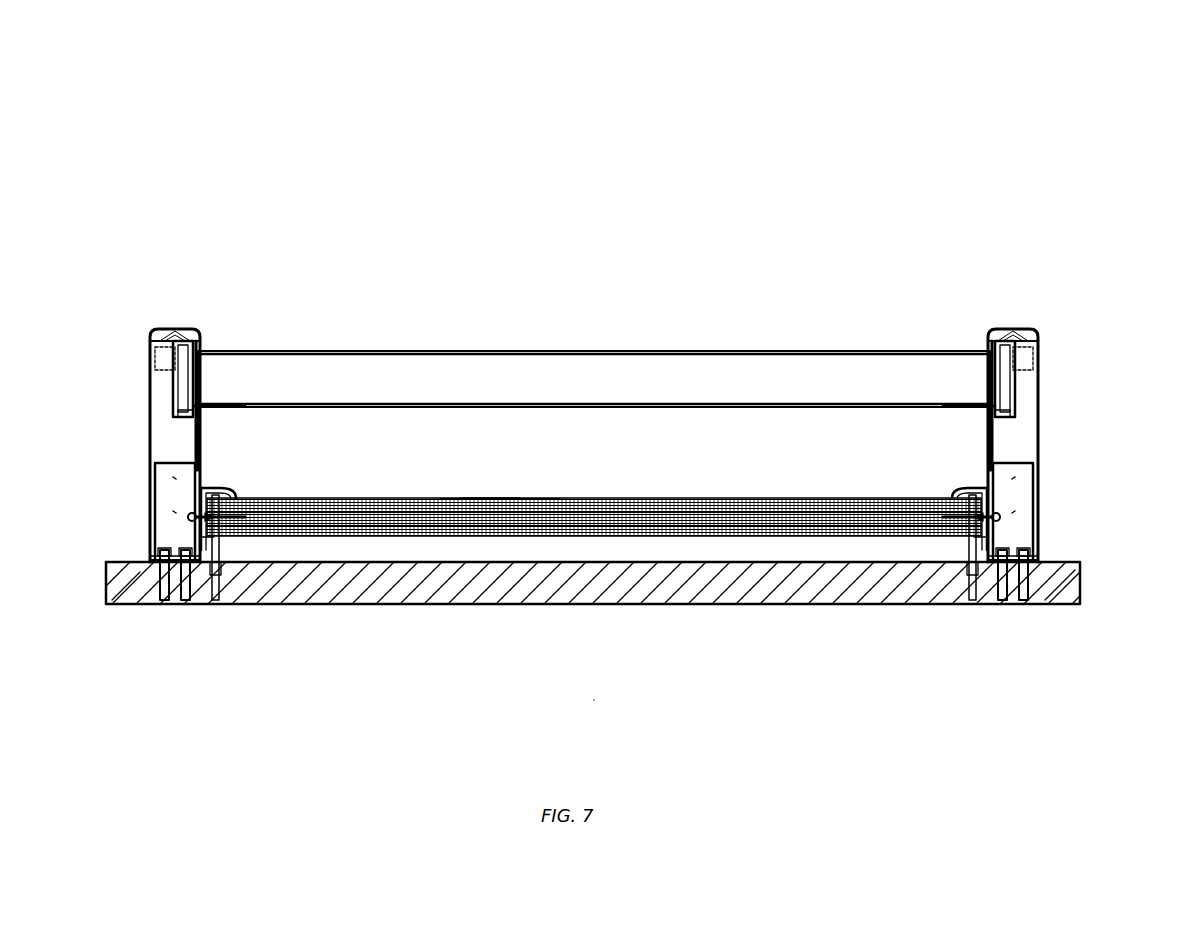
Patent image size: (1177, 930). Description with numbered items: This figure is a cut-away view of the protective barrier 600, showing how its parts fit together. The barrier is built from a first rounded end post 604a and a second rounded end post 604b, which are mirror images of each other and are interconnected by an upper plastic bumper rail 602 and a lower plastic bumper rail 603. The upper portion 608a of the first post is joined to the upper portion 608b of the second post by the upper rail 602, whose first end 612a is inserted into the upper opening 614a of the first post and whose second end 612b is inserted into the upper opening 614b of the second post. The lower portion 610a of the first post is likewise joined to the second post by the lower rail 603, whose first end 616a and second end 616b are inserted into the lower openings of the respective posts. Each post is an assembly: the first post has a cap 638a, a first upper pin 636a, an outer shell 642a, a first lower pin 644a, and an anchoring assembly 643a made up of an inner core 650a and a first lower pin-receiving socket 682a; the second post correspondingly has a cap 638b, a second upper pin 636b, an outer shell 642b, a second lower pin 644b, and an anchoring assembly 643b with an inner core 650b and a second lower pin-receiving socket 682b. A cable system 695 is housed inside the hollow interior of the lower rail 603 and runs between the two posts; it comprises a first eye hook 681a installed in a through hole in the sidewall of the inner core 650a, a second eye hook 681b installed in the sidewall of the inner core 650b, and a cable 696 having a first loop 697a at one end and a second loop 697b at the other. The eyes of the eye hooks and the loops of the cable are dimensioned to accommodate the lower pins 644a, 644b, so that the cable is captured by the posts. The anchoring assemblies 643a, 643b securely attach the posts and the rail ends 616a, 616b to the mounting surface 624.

The protective barrier 600 is at (643, 112).
The first rounded end post 604a is at (166, 230).
The second rounded end post 604b is at (1012, 258).
The upper plastic bumper rail 602 is at (585, 345).
The lower plastic bumper rail 603 is at (660, 497).
The mounting surface 624 is at (500, 590).
The upper portion of first rounded end post 608a is at (150, 365).
The upper portion of second rounded end post 608b is at (1040, 365).
The first upper pin 636a is at (197, 375).
The second upper pin 636b is at (996, 375).
The cap 638a is at (183, 335).
The cap 638b is at (1030, 333).
The first end of upper plastic bumper rail 612a is at (247, 350).
The second end of upper plastic bumper rail 612b is at (905, 352).
The upper opening of first rounded end post 614a is at (200, 406).
The upper opening of second rounded end post 614b is at (988, 406).
The outer shell 642a is at (203, 433).
The outer shell 642b is at (1037, 420).
The lower portion of first rounded end post 610a is at (150, 470).
The first end of lower plastic bumper rail 616a is at (322, 497).
The second end of lower plastic bumper rail 616b is at (940, 497).
The first loop 697a is at (200, 510).
The second loop 697b is at (990, 516).
The first eye hook 681a is at (190, 515).
The second eye hook 681b is at (1000, 515).
The inner core 650a is at (150, 548).
The inner core 650b is at (1040, 548).
The first lower pin 644a is at (220, 552).
The second lower pin 644b is at (967, 550).
The first lower pin-receiving socket 682a is at (222, 603).
The second lower pin-receiving socket 682b is at (968, 603).
The anchoring assembly 643a is at (140, 600).
The anchoring assembly 643b is at (1045, 607).
The cable system 695 is at (478, 476).
The cable 696 is at (480, 500).